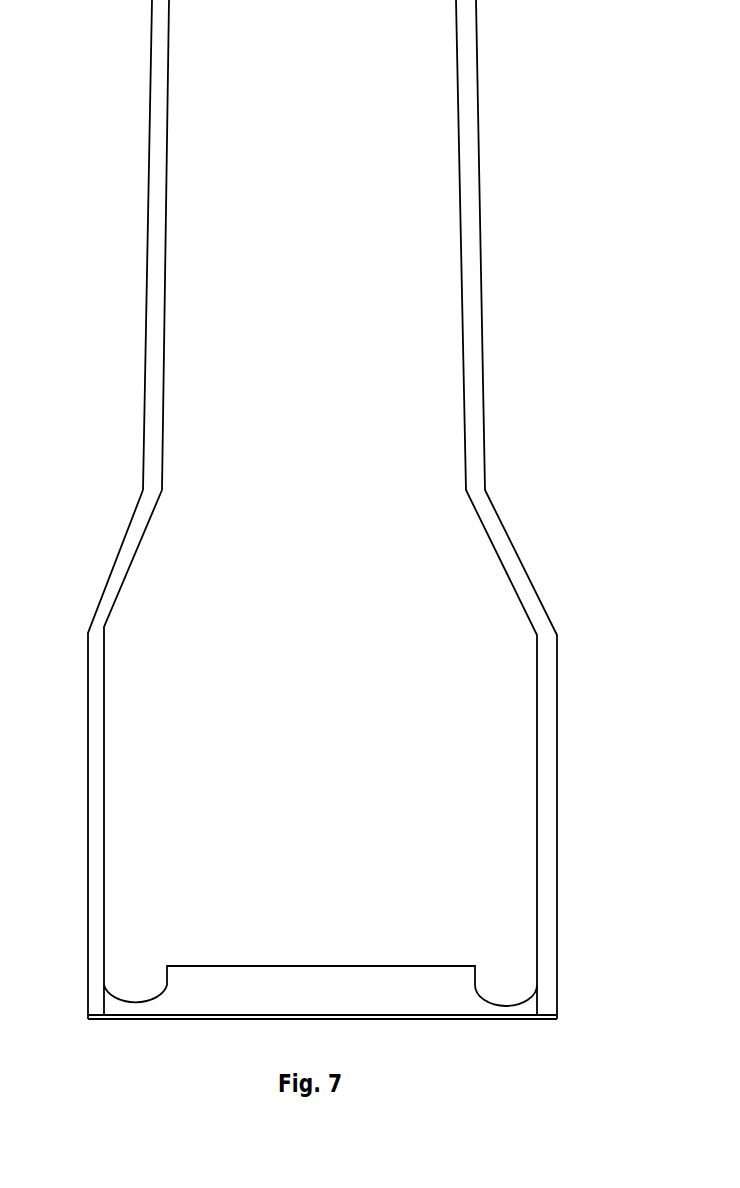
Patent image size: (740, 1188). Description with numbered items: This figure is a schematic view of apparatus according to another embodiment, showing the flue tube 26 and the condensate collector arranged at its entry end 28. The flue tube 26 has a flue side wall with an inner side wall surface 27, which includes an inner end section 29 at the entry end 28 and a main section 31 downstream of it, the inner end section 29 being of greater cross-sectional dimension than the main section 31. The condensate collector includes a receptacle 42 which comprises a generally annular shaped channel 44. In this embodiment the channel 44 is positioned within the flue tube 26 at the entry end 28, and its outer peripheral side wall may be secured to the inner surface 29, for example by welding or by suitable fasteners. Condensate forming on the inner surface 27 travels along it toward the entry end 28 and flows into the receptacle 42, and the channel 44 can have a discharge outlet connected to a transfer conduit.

The flue tube 26 is at (497, 339).
The inner side wall surface 27 is at (174, 389).
The entry end 28 is at (557, 982).
The inner end section 29 is at (105, 669).
The main section 31 is at (165, 298).
The receptacle 42 is at (133, 1021).
The channel 44 is at (145, 978).